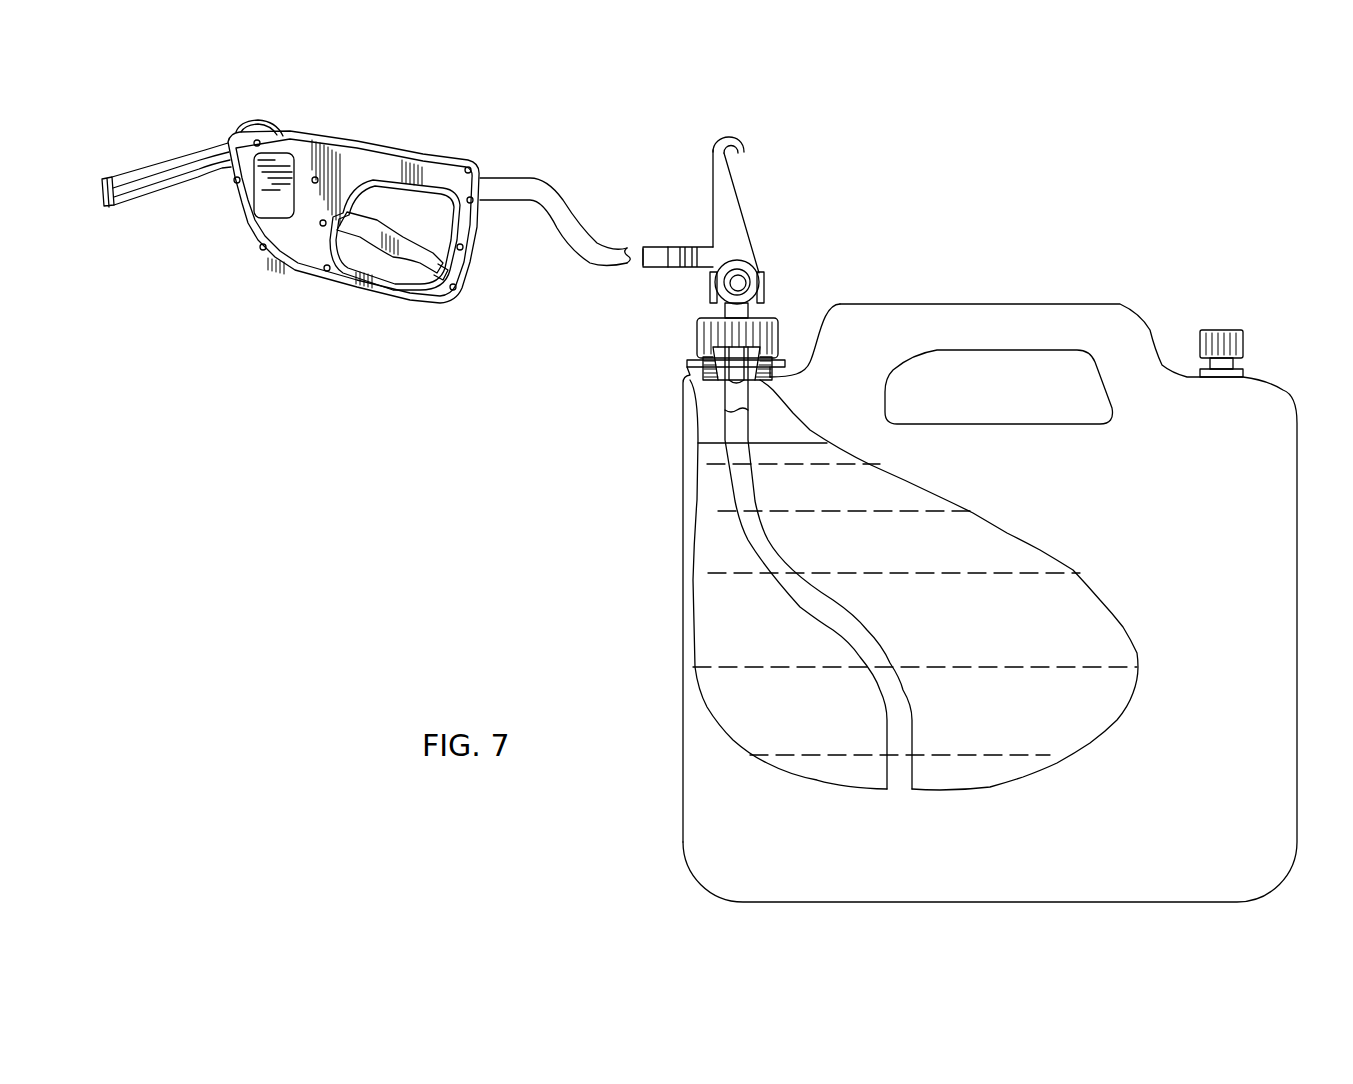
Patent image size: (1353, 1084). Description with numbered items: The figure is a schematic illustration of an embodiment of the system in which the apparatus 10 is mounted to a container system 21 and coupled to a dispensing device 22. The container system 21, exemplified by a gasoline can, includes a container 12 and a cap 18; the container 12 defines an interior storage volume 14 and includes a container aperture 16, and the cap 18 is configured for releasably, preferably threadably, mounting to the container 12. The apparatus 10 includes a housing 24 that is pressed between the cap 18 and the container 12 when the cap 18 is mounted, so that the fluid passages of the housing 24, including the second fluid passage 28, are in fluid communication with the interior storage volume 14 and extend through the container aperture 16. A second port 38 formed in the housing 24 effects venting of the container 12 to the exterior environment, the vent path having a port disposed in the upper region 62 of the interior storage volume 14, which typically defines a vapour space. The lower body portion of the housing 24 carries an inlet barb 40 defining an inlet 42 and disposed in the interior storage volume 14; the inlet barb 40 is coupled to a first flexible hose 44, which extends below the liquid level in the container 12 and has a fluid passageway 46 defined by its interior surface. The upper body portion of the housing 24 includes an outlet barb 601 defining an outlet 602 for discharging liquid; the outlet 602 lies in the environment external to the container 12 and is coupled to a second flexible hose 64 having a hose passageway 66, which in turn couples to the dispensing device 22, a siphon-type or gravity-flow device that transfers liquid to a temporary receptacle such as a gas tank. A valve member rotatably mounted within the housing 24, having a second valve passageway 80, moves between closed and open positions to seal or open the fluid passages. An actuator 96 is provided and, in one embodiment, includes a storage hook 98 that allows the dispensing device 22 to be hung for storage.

The apparatus 10 is at (720, 224).
The container 12 is at (956, 511).
The interior storage volume 14 is at (733, 625).
The container aperture 16 is at (713, 382).
The cap 18 is at (697, 333).
The container system 21 is at (981, 204).
The dispensing device 22 is at (410, 156).
The housing 24 is at (694, 252).
The second fluid passage 28 is at (770, 312).
The second port 38 is at (753, 273).
The inlet barb 40 is at (688, 362).
The inlet 42 is at (740, 386).
The first flexible hose 44 is at (763, 490).
The fluid passageway 46 is at (727, 395).
The upper region 62 is at (773, 412).
The second flexible hose 64 is at (580, 257).
The hose passageway 66 is at (643, 257).
The second valve passageway 80 is at (727, 287).
The actuator 96 is at (760, 226).
The storage hook 98 is at (744, 154).
The outlet barb 601 is at (706, 240).
The outlet 602 is at (667, 253).